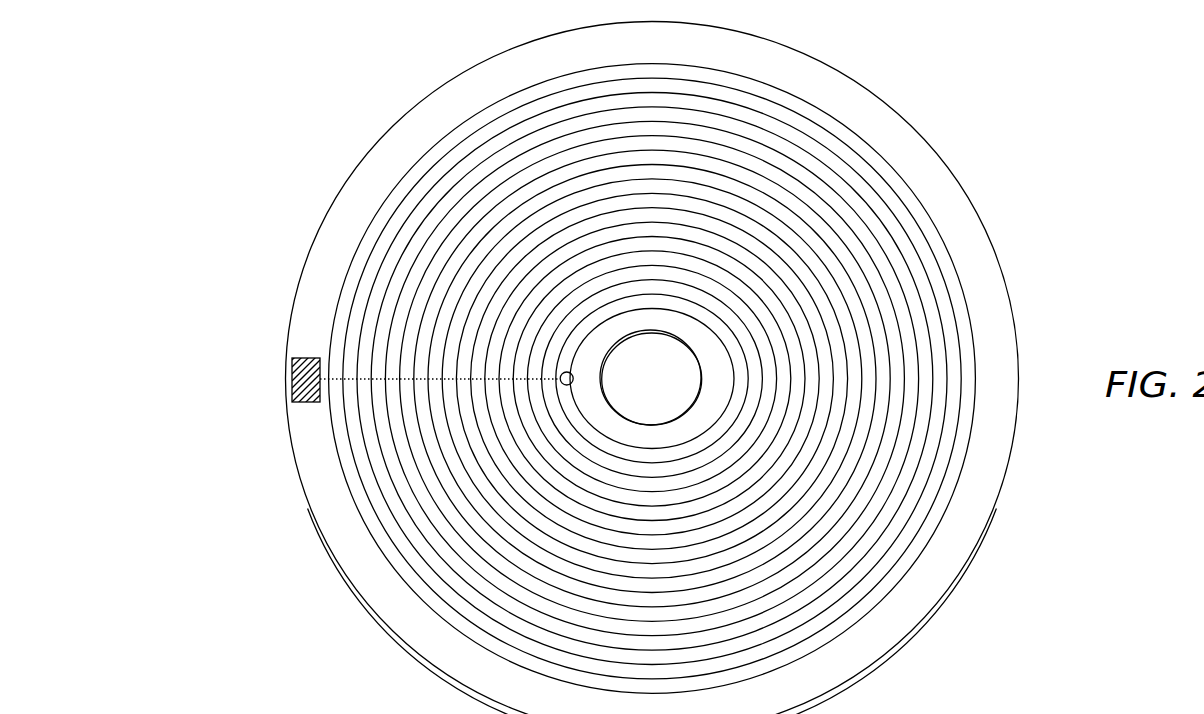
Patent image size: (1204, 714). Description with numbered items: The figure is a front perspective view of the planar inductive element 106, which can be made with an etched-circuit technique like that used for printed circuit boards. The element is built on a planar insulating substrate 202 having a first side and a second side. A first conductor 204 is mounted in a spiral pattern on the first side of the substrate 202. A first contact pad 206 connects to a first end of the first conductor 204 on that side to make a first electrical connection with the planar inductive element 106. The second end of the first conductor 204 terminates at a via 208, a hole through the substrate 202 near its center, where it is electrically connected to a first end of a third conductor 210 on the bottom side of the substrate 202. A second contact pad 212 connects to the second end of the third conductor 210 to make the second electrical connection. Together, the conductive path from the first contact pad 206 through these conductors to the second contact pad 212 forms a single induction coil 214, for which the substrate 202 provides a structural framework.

The planar inductive element 106 is at (988, 108).
The induction coil 214 is at (330, 251).
The planar insulating substrate 202 is at (313, 288).
The second contact pad 212 is at (259, 343).
The first contact pad 206 is at (292, 377).
The third conductor 210 is at (433, 393).
The first conductor 204 is at (333, 492).
The via 208 is at (564, 386).